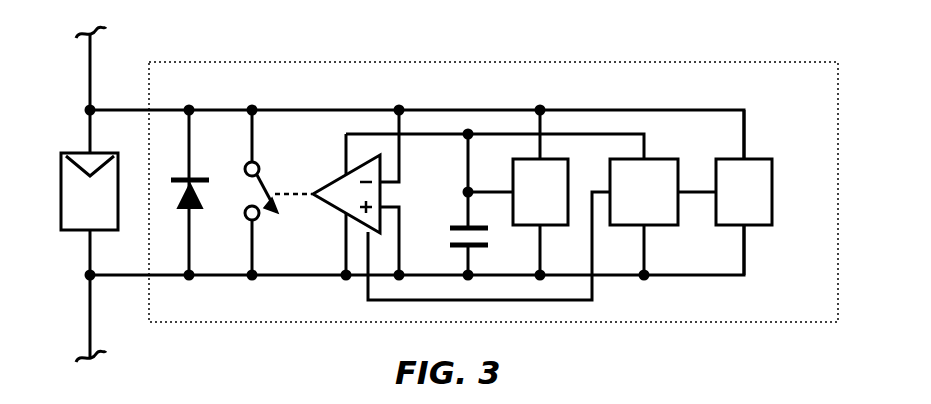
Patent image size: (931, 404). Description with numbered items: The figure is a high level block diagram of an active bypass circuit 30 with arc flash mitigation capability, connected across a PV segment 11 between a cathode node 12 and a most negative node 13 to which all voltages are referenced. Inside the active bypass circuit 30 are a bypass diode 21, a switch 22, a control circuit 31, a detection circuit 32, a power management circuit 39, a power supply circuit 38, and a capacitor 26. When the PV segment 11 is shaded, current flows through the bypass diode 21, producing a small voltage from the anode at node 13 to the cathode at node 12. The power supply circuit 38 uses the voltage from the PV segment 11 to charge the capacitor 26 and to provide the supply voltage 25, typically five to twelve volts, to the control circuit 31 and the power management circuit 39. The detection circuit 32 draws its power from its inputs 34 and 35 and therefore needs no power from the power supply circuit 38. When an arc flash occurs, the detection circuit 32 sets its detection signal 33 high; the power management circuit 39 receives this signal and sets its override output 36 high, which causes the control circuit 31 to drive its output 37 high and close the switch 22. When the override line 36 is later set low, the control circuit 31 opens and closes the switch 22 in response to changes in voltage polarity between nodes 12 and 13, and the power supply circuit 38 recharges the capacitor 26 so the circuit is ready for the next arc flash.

The PV segment 11 is at (61, 197).
The cathode 12 is at (90, 80).
The most negative node 13 is at (90, 312).
The bypass diode 21 is at (206, 178).
The switch 22 is at (246, 216).
The supply voltage 25 is at (345, 162).
The capacitor 26 is at (449, 228).
The active bypass circuit 30 is at (214, 62).
The control circuit 31 is at (330, 210).
The detection circuit 32 is at (772, 190).
The detection signal 33 is at (716, 188).
The detection circuit input 34 is at (746, 154).
The detection circuit input 35 is at (746, 230).
The override output 36 is at (368, 300).
The control circuit output 37 is at (292, 192).
The power supply circuit 38 is at (553, 228).
The power management circuit 39 is at (667, 228).